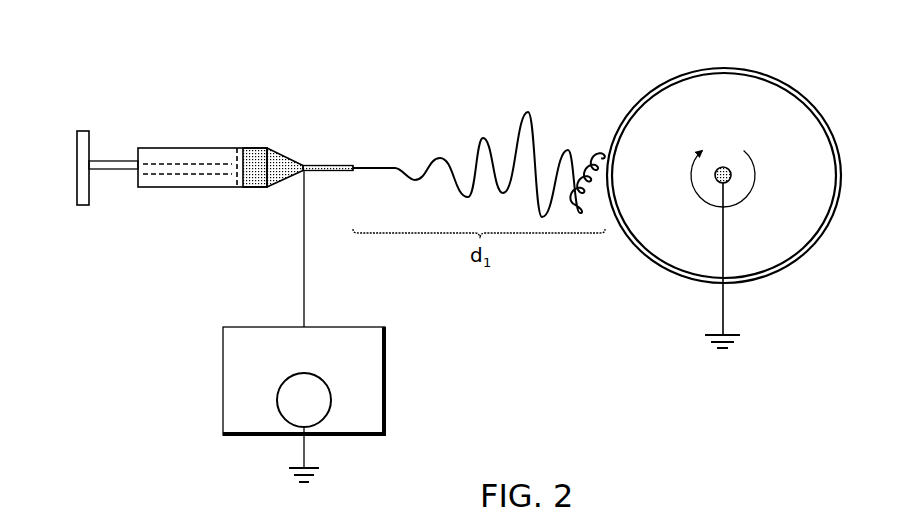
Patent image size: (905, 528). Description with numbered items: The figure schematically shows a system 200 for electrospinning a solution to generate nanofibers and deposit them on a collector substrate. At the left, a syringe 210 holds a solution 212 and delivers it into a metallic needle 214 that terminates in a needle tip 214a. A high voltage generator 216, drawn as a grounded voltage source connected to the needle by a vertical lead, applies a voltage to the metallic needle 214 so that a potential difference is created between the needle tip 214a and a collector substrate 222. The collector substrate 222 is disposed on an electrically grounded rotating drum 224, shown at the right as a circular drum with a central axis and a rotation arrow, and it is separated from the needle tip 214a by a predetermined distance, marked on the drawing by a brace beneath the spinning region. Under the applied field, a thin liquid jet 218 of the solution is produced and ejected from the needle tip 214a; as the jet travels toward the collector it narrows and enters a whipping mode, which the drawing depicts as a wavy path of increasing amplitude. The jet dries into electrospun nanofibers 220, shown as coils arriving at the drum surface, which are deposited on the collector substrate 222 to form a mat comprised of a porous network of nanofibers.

The system 200 is at (488, 38).
The syringe 210 is at (172, 188).
The solution 212 is at (260, 184).
The metallic needle 214 is at (315, 165).
The needle tip 214a is at (357, 176).
The high voltage generator 216 is at (223, 378).
The thin liquid jet 218 is at (377, 163).
The electrospun nanofibers 220 is at (589, 152).
The collector substrate 222 is at (730, 67).
The rotating drum 224 is at (785, 108).